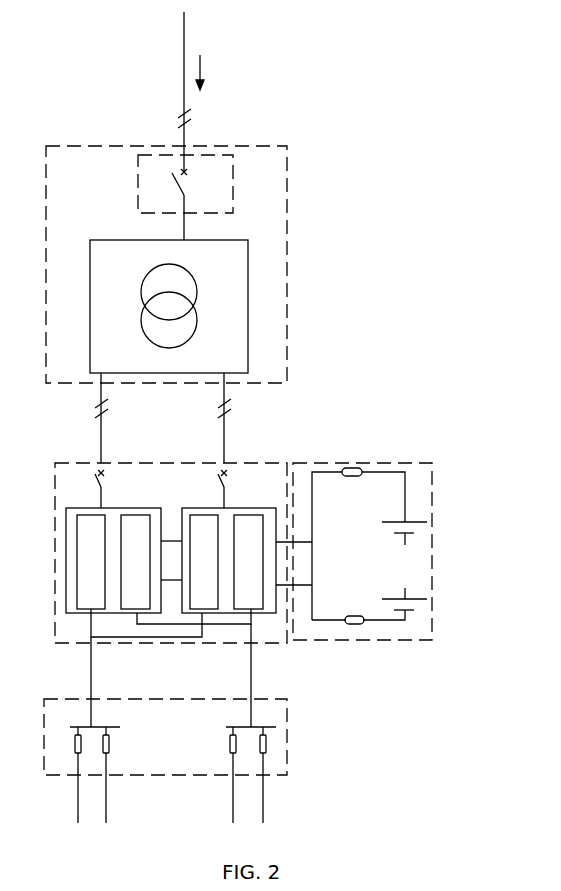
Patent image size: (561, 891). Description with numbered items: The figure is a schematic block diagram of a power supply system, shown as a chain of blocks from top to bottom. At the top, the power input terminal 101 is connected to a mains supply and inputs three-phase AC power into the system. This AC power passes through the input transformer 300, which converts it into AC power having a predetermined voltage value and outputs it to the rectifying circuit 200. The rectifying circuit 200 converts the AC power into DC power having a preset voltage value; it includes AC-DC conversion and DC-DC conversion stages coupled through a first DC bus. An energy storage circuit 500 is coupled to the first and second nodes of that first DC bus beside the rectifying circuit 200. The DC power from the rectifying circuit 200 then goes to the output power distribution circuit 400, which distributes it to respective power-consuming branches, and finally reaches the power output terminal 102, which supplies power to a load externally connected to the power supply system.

The power input terminal 101 is at (186, 58).
The input transformer 300 is at (286, 260).
The rectifying circuit 200 is at (270, 463).
The energy storage circuit 500 is at (366, 463).
The output power distribution circuit 400 is at (287, 735).
The power output terminal 102 is at (264, 795).